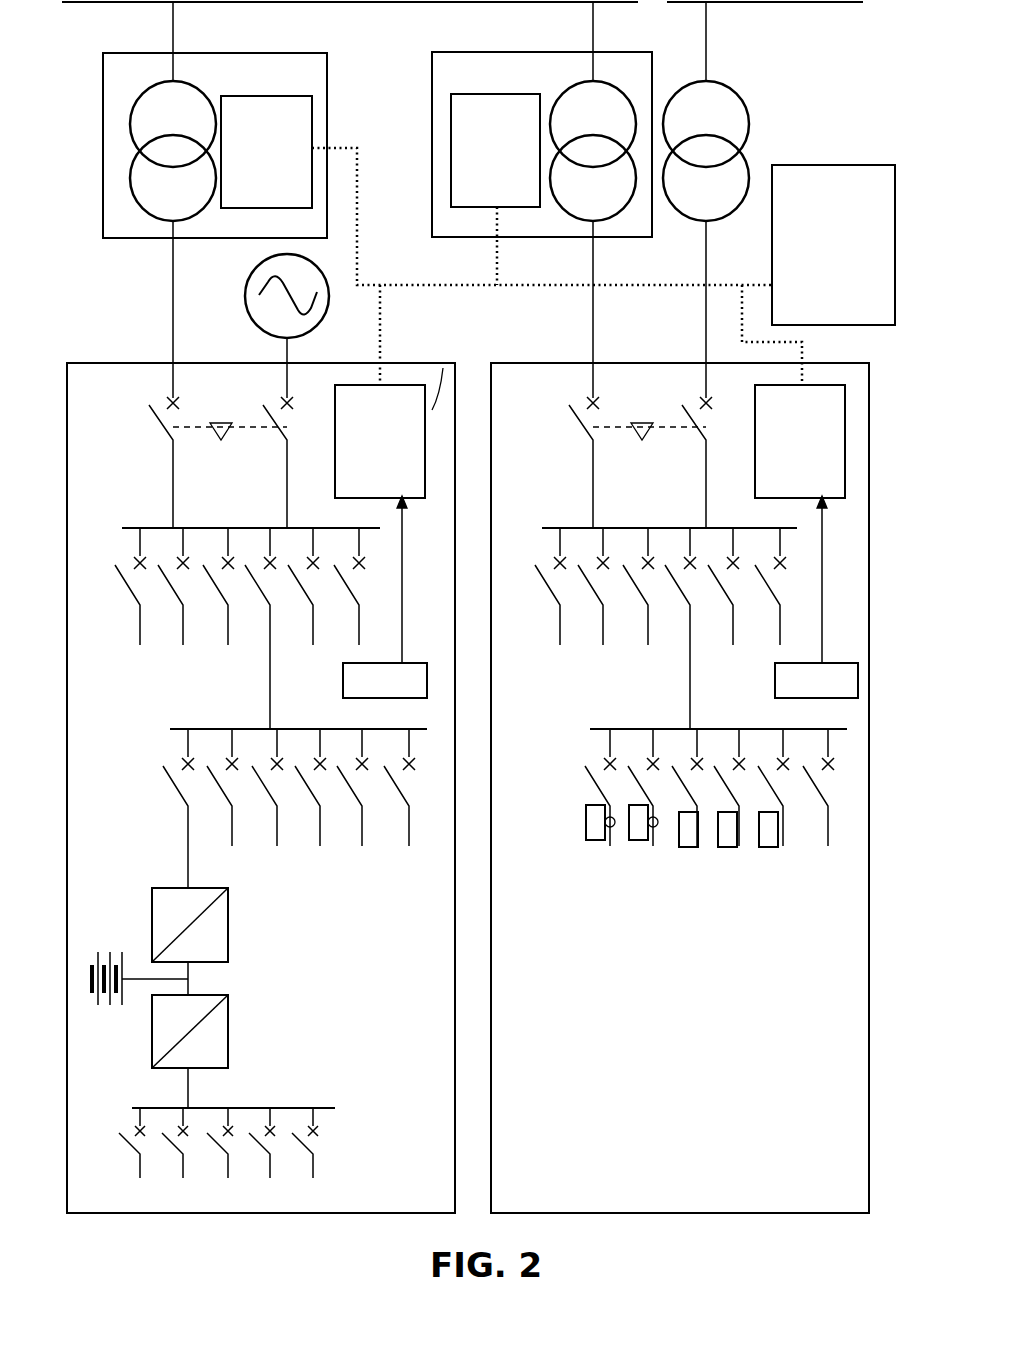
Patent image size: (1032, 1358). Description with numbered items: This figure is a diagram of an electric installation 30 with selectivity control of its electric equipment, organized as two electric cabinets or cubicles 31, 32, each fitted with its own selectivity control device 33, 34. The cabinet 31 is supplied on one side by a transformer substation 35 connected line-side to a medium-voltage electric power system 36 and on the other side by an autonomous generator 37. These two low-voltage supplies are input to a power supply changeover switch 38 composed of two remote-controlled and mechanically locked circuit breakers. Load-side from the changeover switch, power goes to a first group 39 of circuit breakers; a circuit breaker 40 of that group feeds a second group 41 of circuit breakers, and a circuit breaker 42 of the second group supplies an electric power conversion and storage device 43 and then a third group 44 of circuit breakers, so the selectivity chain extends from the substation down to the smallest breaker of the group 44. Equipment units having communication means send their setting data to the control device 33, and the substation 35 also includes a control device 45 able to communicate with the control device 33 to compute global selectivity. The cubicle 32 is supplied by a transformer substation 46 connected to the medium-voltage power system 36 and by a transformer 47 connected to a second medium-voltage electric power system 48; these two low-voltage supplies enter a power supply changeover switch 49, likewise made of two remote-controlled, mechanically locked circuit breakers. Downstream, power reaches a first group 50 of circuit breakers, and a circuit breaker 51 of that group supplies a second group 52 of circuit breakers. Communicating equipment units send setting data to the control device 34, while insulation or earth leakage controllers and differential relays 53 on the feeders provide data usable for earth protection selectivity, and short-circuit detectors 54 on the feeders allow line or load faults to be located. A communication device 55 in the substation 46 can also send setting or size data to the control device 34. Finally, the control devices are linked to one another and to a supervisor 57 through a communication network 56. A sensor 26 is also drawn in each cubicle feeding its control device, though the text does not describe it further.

The sensor 26 is at (410, 663).
The electric installation 30 is at (799, 102).
The electric cabinet 31 is at (99, 363).
The cubicle 32 is at (527, 363).
The selectivity control device 33 is at (405, 385).
The selectivity control device 34 is at (818, 385).
The transformer substation 35 is at (108, 104).
The medium-voltage electric power system 36 is at (407, 3).
The autonomous generator 37 is at (247, 292).
The power supply changeover switch 38 is at (141, 434).
The first group of circuit breakers 39 is at (376, 591).
The circuit breaker 40 is at (262, 628).
The second group of circuit breakers 41 is at (142, 771).
The circuit breaker 42 is at (178, 796).
The electric power conversion and storage device 43 is at (255, 1021).
The third group of circuit breakers 44 is at (347, 1136).
The control device 45 is at (312, 128).
The transformer substation 46 is at (432, 92).
The transformer 47 is at (770, 78).
The second medium-voltage electric power system 48 is at (797, 3).
The power supply changeover switch 49 is at (563, 434).
The first group of circuit breakers 50 is at (797, 590).
The circuit breaker 51 is at (686, 603).
The second group of circuit breakers 52 is at (572, 773).
The insulation or earth leakage controllers and differential relays 53 is at (592, 840).
The short-circuit detectors 54 is at (688, 847).
The communication device 55 is at (451, 180).
The communication network 56 is at (365, 285).
The supervisor 57 is at (822, 165).